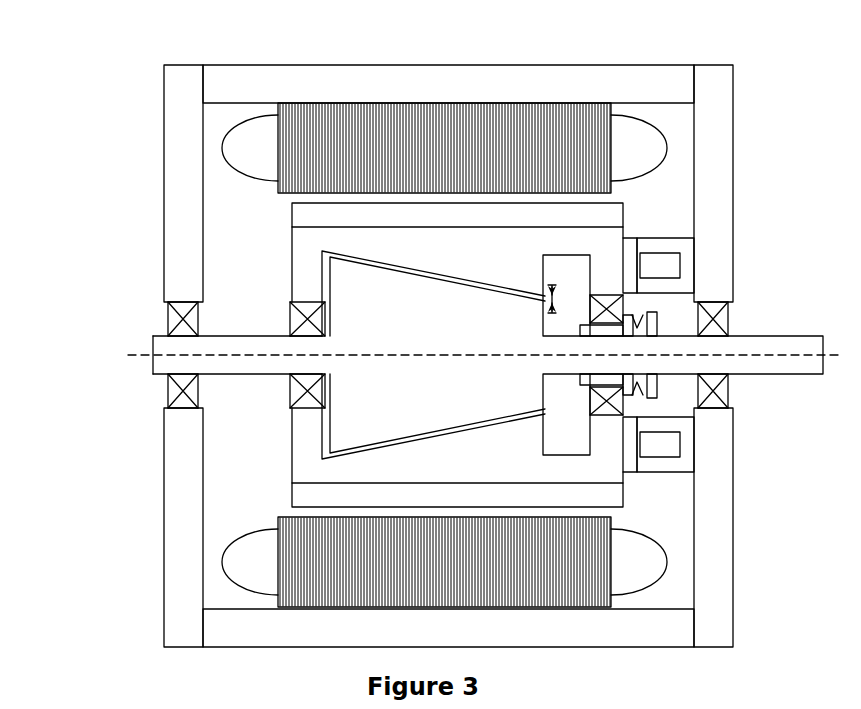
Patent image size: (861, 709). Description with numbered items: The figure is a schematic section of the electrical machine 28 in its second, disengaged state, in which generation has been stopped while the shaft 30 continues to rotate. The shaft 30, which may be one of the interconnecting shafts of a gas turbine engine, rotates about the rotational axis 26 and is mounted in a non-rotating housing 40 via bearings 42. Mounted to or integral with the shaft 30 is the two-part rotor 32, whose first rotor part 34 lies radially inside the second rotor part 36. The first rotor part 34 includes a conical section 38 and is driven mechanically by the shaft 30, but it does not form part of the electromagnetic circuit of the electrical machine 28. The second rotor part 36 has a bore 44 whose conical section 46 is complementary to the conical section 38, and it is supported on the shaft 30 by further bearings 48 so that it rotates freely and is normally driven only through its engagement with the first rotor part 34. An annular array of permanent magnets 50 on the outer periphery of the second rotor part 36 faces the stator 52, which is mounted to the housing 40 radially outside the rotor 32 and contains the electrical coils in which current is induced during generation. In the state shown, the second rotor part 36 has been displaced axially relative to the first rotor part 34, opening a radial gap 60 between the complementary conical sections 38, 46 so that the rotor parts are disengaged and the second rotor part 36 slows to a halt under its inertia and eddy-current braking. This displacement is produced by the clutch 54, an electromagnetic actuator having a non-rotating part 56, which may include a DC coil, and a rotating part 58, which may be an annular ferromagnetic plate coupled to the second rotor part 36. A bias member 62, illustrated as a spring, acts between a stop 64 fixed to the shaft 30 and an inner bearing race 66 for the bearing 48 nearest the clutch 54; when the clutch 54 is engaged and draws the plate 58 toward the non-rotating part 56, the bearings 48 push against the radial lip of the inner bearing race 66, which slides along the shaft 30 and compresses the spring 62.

The rotational axis 26 is at (757, 355).
The electrical machine 28 is at (96, 99).
The shaft 30 is at (163, 360).
The rotor 32 is at (273, 203).
The first rotor part 34 is at (433, 355).
The second rotor part 36 is at (437, 252).
The conical section 38 is at (486, 296).
The housing 40 is at (165, 183).
The bearings 42 is at (168, 318).
The bore 44 is at (548, 355).
The conical section 46 is at (463, 278).
The further bearings 48 is at (276, 392).
The permanent magnets 50 is at (365, 214).
The stator 52 is at (386, 127).
The clutch 54 is at (692, 485).
The non-rotating part 56 is at (701, 271).
The rotating part 58 is at (631, 236).
The radial gap 60 is at (568, 300).
The bias member 62 is at (637, 382).
The stop 64 is at (658, 317).
The inner bearing race 66 is at (582, 333).